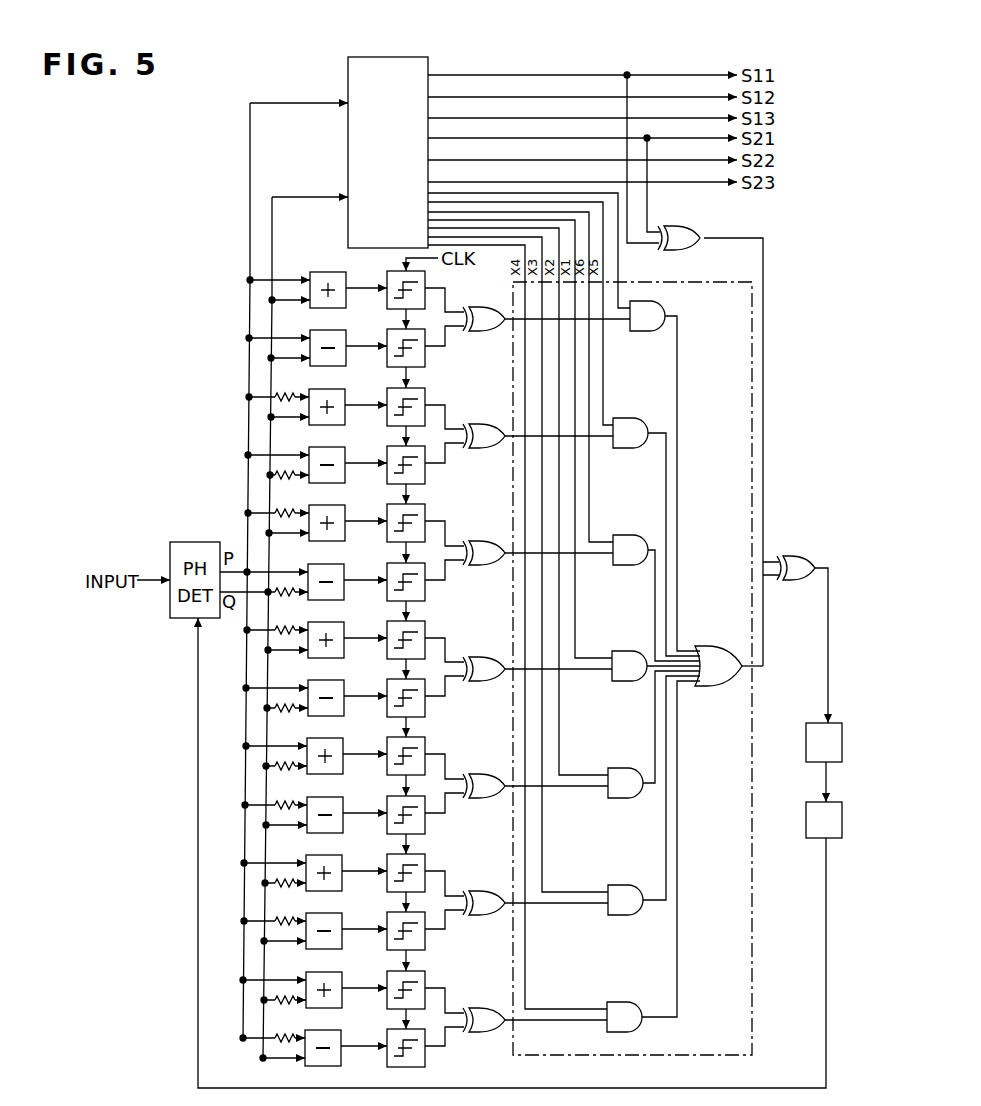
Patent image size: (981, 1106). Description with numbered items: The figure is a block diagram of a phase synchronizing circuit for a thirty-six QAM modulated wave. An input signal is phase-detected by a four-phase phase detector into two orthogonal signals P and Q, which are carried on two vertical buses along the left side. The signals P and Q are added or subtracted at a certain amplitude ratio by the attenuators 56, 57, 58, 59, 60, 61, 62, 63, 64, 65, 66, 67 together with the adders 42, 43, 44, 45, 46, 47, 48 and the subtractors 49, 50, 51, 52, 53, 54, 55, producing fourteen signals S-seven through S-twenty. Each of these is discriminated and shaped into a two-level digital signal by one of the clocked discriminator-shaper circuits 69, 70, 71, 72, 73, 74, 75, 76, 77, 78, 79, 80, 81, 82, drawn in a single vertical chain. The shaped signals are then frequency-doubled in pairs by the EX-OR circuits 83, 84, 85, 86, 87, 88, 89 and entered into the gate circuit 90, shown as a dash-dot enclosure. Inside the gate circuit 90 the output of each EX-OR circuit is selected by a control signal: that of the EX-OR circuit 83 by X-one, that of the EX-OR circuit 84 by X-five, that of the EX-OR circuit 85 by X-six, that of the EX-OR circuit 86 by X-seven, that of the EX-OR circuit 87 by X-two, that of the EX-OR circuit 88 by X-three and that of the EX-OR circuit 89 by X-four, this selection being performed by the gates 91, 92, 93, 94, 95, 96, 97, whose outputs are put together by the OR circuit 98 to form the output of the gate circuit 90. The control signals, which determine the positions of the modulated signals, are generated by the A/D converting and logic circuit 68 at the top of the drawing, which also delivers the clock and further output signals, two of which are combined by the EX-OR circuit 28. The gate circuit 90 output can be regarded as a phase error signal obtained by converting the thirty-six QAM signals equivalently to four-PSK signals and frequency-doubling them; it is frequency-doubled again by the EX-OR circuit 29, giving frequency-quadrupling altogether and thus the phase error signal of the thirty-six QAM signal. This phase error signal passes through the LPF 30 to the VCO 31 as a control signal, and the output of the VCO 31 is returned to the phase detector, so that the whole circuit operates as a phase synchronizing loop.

The A/D converting and logic circuit 68 is at (391, 56).
The EX-OR circuit 28 is at (699, 235).
The EX-OR circuit 29 is at (795, 585).
The LPF 30 is at (843, 742).
The VCO 31 is at (842, 825).
The adder 42 is at (318, 272).
The adder 43 is at (317, 389).
The adder 44 is at (317, 505).
The adder 45 is at (316, 622).
The adder 46 is at (315, 738).
The adder 47 is at (314, 855).
The adder 48 is at (314, 972).
The subtractor 49 is at (312, 331).
The subtractor 50 is at (312, 448).
The subtractor 51 is at (316, 564).
The subtractor 52 is at (316, 680).
The subtractor 53 is at (315, 797).
The subtractor 54 is at (314, 913).
The subtractor 55 is at (313, 1030).
The attenuator 56 is at (287, 393).
The attenuator 57 is at (285, 480).
The attenuator 58 is at (286, 518).
The attenuator 59 is at (285, 597).
The attenuator 60 is at (286, 635).
The attenuator 61 is at (285, 713).
The attenuator 62 is at (276, 765).
The attenuator 63 is at (280, 803).
The attenuator 64 is at (276, 884).
The attenuator 65 is at (280, 919).
The attenuator 66 is at (275, 1000).
The attenuator 67 is at (282, 1039).
The comparator 69 is at (387, 304).
The comparator 70 is at (387, 362).
The comparator 71 is at (387, 421).
The comparator 72 is at (387, 479).
The comparator 73 is at (387, 537).
The comparator 74 is at (387, 596).
The comparator 75 is at (387, 654).
The comparator 76 is at (387, 712).
The comparator 77 is at (387, 770).
The comparator 78 is at (387, 829).
The comparator 79 is at (387, 887).
The comparator 80 is at (387, 945).
The comparator 81 is at (387, 1004).
The comparator 82 is at (387, 1062).
The EX-OR circuit 83 is at (484, 306).
The EX-OR circuit 84 is at (484, 423).
The EX-OR circuit 85 is at (484, 540).
The EX-OR circuit 86 is at (484, 656).
The EX-OR circuit 87 is at (484, 773).
The EX-OR circuit 88 is at (484, 890).
The EX-OR circuit 89 is at (484, 1007).
The gate circuit 90 is at (670, 284).
The AND gate 91 is at (637, 332).
The AND gate 92 is at (626, 416).
The AND gate 93 is at (626, 533).
The AND gate 94 is at (625, 648).
The AND gate 95 is at (621, 766).
The AND gate 96 is at (624, 884).
The AND gate 97 is at (621, 1000).
The OR circuit 98 is at (718, 645).